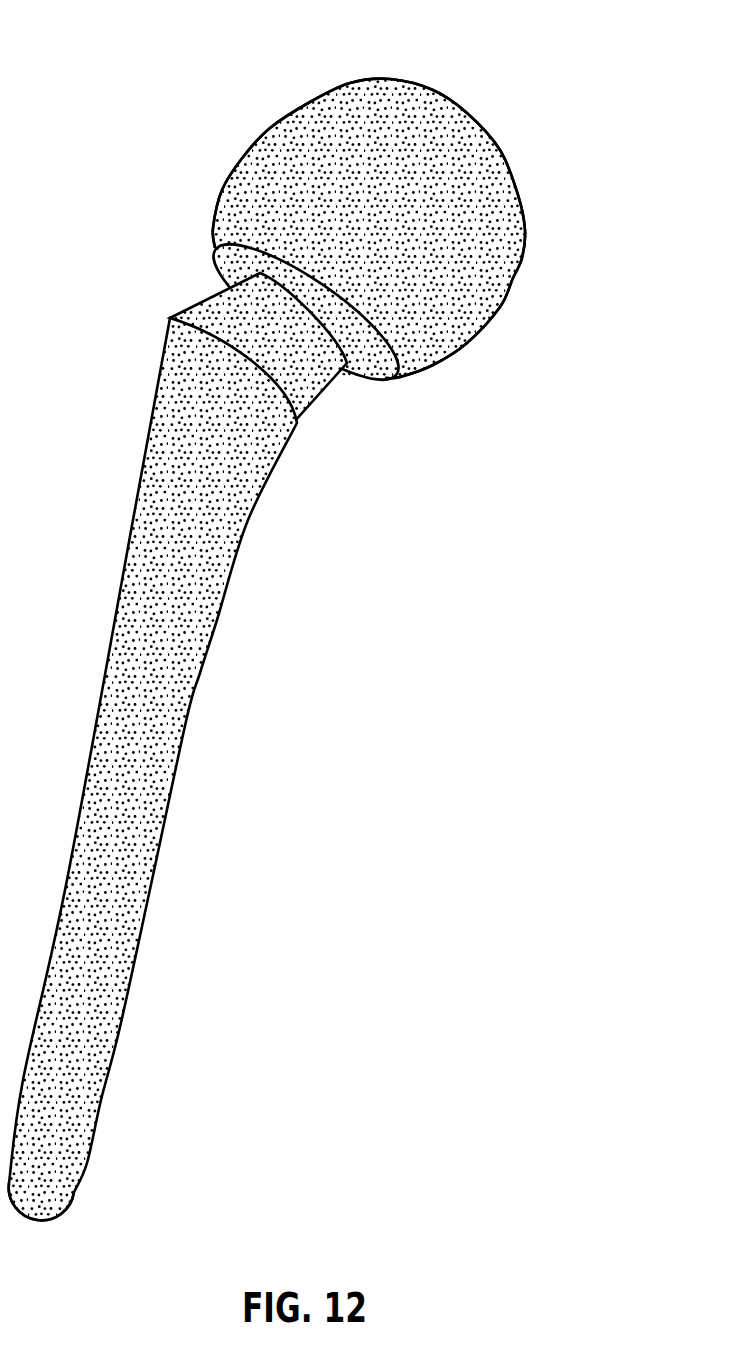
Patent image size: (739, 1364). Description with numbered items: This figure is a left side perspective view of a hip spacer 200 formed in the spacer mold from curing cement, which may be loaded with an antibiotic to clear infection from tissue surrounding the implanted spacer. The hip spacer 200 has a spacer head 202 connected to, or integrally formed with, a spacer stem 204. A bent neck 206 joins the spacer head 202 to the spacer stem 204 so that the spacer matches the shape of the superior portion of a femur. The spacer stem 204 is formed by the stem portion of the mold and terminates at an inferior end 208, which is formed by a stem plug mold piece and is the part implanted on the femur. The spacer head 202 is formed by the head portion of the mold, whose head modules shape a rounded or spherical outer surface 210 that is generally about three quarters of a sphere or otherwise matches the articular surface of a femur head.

The hip spacer 200 is at (320, 615).
The spacer head 202 is at (522, 258).
The spacer stem 204 is at (143, 937).
The bent neck 206 is at (324, 392).
The inferior end 208 is at (65, 1208).
The outer surface 210 is at (472, 119).